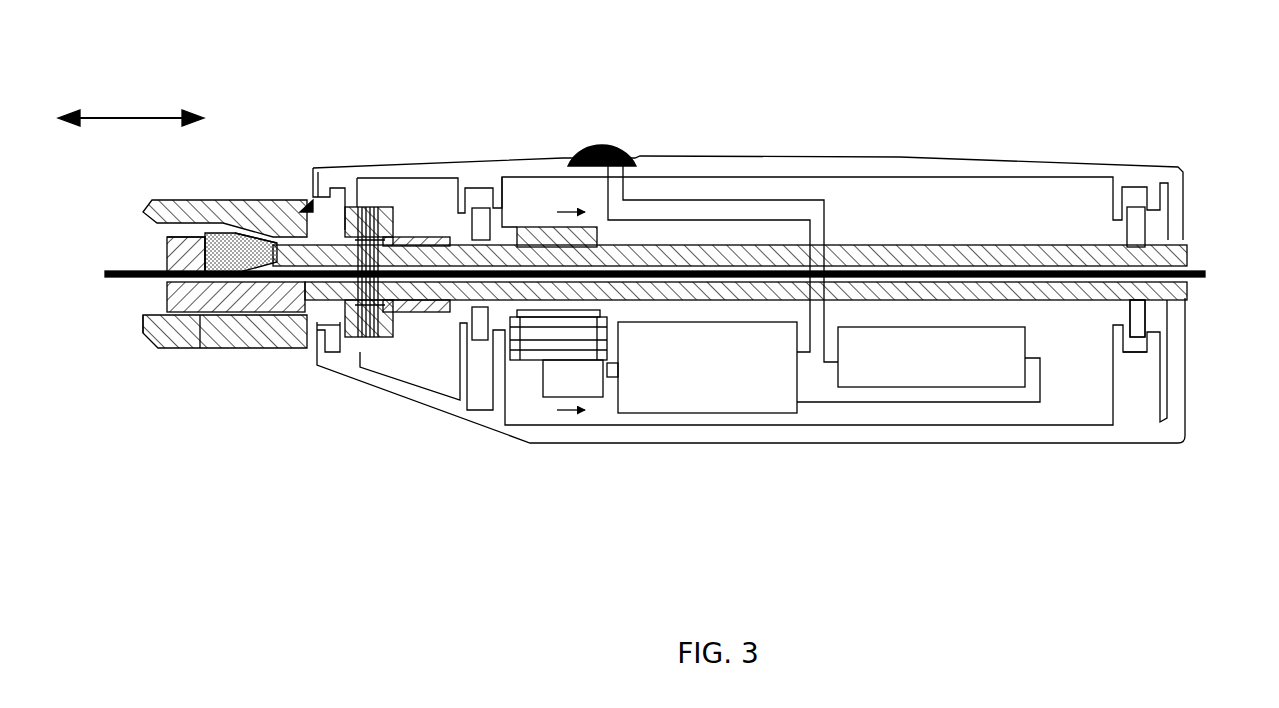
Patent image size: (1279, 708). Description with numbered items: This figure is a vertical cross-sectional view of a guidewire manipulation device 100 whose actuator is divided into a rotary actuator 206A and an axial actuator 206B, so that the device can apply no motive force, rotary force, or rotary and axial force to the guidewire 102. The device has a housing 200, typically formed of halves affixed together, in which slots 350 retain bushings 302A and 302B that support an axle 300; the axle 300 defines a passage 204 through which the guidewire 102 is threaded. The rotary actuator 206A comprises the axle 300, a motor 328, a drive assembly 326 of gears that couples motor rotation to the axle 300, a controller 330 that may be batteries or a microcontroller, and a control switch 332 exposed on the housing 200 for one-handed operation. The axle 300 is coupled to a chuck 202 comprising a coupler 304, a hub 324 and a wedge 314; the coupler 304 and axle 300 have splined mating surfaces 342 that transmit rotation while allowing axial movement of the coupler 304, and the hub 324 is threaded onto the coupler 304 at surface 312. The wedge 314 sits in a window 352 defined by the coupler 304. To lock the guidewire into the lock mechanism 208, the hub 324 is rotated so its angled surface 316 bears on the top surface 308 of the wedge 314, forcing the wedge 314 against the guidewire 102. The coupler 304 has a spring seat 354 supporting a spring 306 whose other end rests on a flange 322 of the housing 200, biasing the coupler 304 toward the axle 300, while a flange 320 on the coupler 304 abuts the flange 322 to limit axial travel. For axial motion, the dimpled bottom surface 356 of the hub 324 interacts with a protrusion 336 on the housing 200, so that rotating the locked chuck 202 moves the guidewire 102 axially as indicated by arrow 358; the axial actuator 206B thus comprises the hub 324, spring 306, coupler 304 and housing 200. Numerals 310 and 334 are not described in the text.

The guidewire manipulation device 100 is at (824, 92).
The guidewire 102 is at (1072, 247).
The housing 200 is at (1000, 160).
The chuck 202 is at (183, 372).
The passage 204 is at (1193, 283).
The rotary actuator 206A is at (582, 455).
The axial actuator 206B is at (287, 170).
The lock mechanism 208 is at (133, 262).
The axle 300 is at (1000, 247).
The bushing 302A is at (1128, 310).
The bushing 302B is at (483, 188).
The coupler 304 is at (425, 237).
The spring 306 is at (378, 210).
The top surface 308 is at (202, 205).
The tube support 310 is at (1030, 302).
The threaded surface 312 is at (270, 348).
The wedge 314 is at (212, 348).
The angled surface 316 is at (226, 240).
The flange 320 is at (337, 208).
The flange 322 is at (355, 205).
The hub 324 is at (270, 232).
The drive assembly 326 is at (522, 412).
The motor 328 is at (707, 367).
The controller 330 is at (931, 357).
The control switch 332 is at (602, 145).
The tube mount 334 is at (533, 227).
The protrusion 336 is at (309, 200).
The splined mating surfaces 342 is at (415, 312).
The slots 350 is at (480, 397).
The window 352 is at (172, 288).
The spring seat 354 is at (395, 235).
The bottom surface 356 is at (313, 360).
The arrow 358 is at (138, 116).